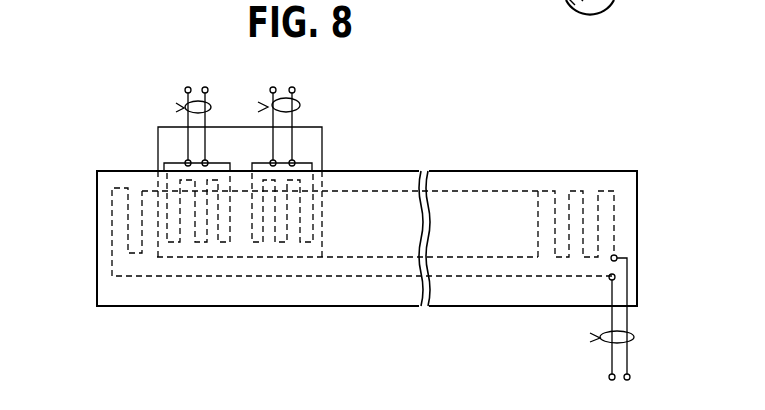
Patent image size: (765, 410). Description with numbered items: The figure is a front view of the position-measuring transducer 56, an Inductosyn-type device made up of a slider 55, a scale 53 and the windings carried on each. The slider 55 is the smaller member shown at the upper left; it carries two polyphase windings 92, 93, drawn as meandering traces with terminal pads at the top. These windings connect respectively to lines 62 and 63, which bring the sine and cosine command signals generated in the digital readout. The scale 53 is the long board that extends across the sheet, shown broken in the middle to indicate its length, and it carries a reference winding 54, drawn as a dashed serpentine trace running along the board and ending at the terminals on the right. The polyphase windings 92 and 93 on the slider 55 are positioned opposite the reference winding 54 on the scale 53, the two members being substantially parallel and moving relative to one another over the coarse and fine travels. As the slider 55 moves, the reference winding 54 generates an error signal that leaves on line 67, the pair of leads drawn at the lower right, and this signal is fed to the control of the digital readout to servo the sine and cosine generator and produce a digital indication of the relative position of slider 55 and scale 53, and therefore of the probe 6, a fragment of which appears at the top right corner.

The probe 6 is at (583, 19).
The scale 53 is at (121, 297).
The reference winding 54 is at (622, 235).
The slider 55 is at (163, 134).
The position-measuring transducer 56 is at (419, 150).
The line 62 is at (300, 103).
The line 63 is at (190, 108).
The line 67 is at (634, 334).
The polyphase winding 92 is at (308, 152).
The polyphase winding 93 is at (163, 155).